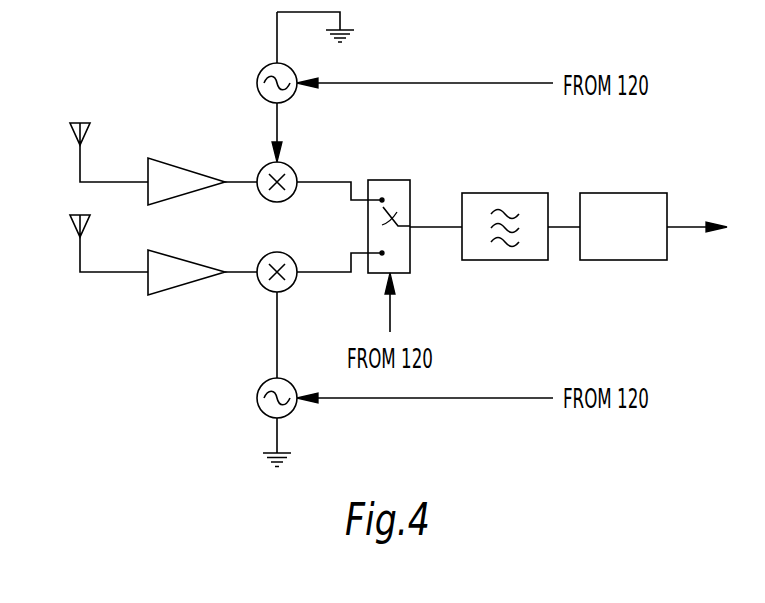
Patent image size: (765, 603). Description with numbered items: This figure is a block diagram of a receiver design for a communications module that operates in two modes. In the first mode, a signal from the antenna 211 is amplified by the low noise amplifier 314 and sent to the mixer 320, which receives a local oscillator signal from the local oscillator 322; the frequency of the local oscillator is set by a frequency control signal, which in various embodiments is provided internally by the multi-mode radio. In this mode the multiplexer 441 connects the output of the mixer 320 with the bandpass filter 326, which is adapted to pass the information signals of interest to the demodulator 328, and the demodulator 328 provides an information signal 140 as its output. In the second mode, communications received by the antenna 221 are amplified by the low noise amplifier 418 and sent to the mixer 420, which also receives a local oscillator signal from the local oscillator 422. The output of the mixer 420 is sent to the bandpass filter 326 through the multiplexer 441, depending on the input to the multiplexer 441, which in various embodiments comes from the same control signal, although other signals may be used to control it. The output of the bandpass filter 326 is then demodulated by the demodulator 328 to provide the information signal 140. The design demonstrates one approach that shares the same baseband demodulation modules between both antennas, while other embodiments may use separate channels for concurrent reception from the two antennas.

The antenna 211 is at (82, 148).
The antenna 221 is at (82, 240).
The low noise amplifier 314 is at (165, 162).
The low noise amplifier 418 is at (165, 252).
The mixer 320 is at (293, 168).
The mixer 420 is at (293, 258).
The local oscillator 322 is at (262, 98).
The local oscillator 422 is at (262, 414).
The multiplexer 441 is at (391, 180).
The bandpass filter 326 is at (506, 193).
The demodulator 328 is at (624, 193).
The information signal 140 is at (715, 222).